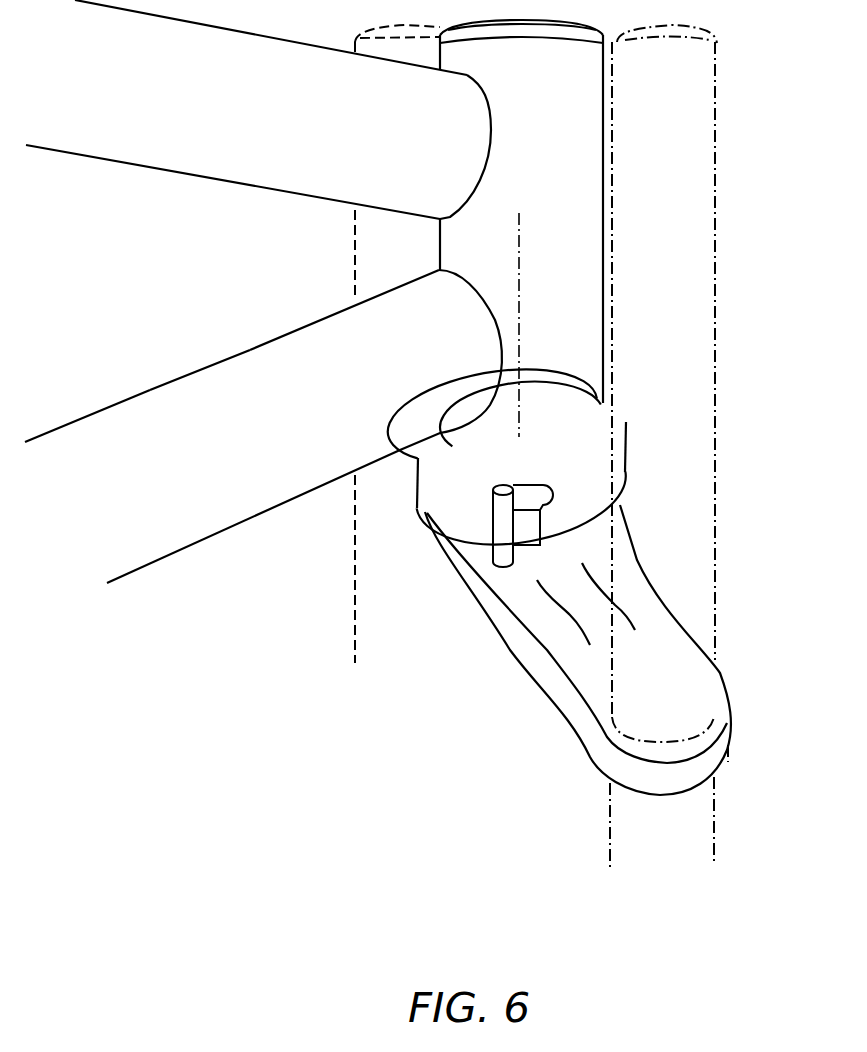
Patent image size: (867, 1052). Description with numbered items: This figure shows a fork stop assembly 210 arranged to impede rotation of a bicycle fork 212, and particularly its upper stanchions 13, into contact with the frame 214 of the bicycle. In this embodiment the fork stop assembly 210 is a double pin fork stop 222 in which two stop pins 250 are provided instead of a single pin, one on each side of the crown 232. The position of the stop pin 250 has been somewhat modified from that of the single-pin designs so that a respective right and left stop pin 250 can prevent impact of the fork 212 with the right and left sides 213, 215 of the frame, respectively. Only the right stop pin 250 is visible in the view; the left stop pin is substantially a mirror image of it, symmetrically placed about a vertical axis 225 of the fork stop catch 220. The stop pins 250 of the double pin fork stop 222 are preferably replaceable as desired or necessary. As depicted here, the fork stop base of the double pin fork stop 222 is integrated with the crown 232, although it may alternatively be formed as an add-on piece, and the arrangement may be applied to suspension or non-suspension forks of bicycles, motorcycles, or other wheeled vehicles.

The upper stanchions 13 is at (698, 240).
The fork stop assembly 210 is at (737, 670).
The fork 212 is at (340, 612).
The right side of the frame 213 is at (290, 372).
The frame 214 is at (125, 422).
The left side of the frame 215 is at (183, 373).
The fork stop catch 220 is at (582, 483).
The double pin fork stop 222 is at (505, 550).
The vertical axis 225 is at (519, 248).
The crown 232 is at (560, 637).
The stop pin 250 is at (497, 518).